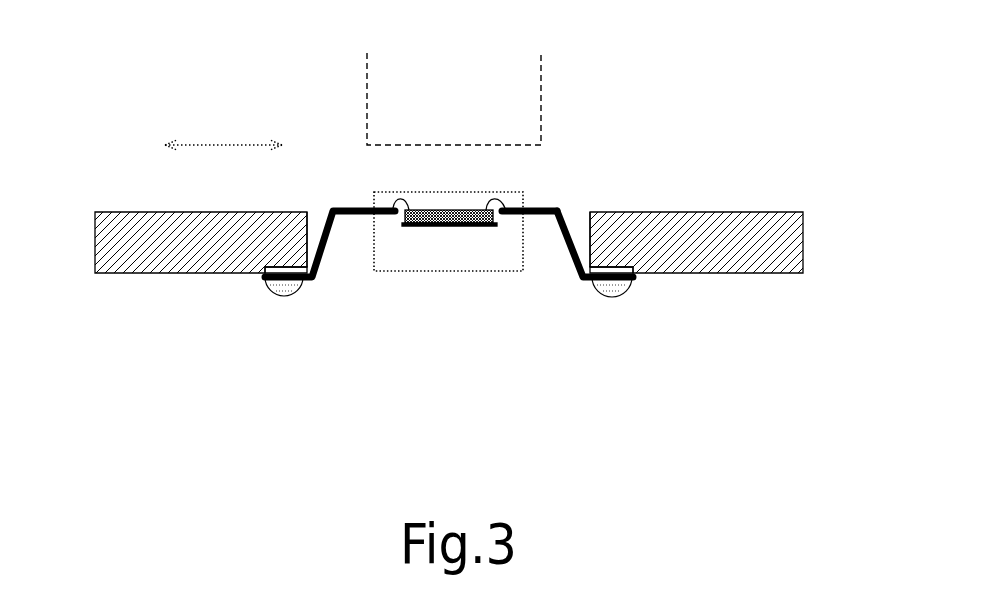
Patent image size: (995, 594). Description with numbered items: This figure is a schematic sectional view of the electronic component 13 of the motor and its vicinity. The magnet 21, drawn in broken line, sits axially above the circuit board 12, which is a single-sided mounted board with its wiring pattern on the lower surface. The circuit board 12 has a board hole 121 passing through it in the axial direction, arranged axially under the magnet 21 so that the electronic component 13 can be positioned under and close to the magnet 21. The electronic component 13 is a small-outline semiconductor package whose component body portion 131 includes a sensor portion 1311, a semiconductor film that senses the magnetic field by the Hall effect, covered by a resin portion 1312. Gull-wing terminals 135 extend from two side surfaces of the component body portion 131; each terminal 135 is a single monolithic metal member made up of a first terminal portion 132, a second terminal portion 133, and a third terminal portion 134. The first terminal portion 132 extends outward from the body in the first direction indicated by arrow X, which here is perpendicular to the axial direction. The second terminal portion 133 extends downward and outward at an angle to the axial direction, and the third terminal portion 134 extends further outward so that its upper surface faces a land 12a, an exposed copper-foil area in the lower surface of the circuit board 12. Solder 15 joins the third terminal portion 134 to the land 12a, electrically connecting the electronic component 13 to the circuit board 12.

The circuit board 12 is at (729, 218).
The land 12a is at (268, 268).
The board hole 121 is at (308, 213).
The electronic component 13 is at (449, 269).
The component body portion 131 is at (441, 252).
The sensor portion 1311 is at (459, 208).
The resin portion 1312 is at (462, 261).
The first terminal portion 132 is at (556, 208).
The second terminal portion 133 is at (571, 249).
The third terminal portion 134 is at (618, 296).
The terminal 135 is at (327, 201).
The solder 15 is at (287, 298).
The magnet 21 is at (541, 103).
The first direction X is at (233, 144).